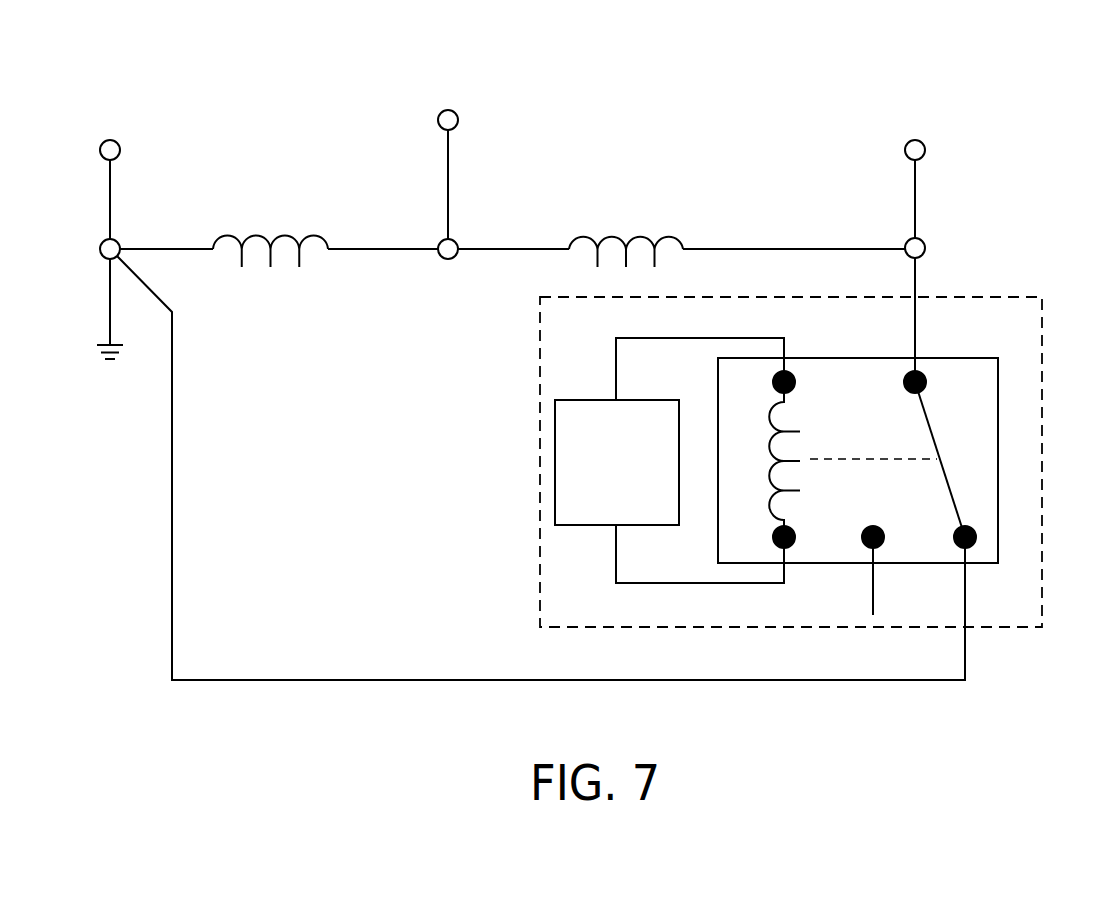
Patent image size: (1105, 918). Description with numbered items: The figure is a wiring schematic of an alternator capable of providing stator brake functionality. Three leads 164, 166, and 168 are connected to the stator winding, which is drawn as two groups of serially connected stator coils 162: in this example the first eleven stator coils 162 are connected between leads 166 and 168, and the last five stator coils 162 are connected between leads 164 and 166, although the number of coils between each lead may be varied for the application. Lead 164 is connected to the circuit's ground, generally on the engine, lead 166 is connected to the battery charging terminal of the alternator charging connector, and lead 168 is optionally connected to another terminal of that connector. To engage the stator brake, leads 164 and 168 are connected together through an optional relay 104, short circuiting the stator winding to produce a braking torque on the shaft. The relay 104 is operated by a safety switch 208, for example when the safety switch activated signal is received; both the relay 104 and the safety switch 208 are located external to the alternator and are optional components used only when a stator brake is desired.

The lead 164 is at (100, 150).
The lead 166 is at (458, 119).
The lead 168 is at (925, 150).
The stator coils 162 is at (443, 219).
The relay 104 is at (998, 483).
The safety switch 208 is at (669, 460).